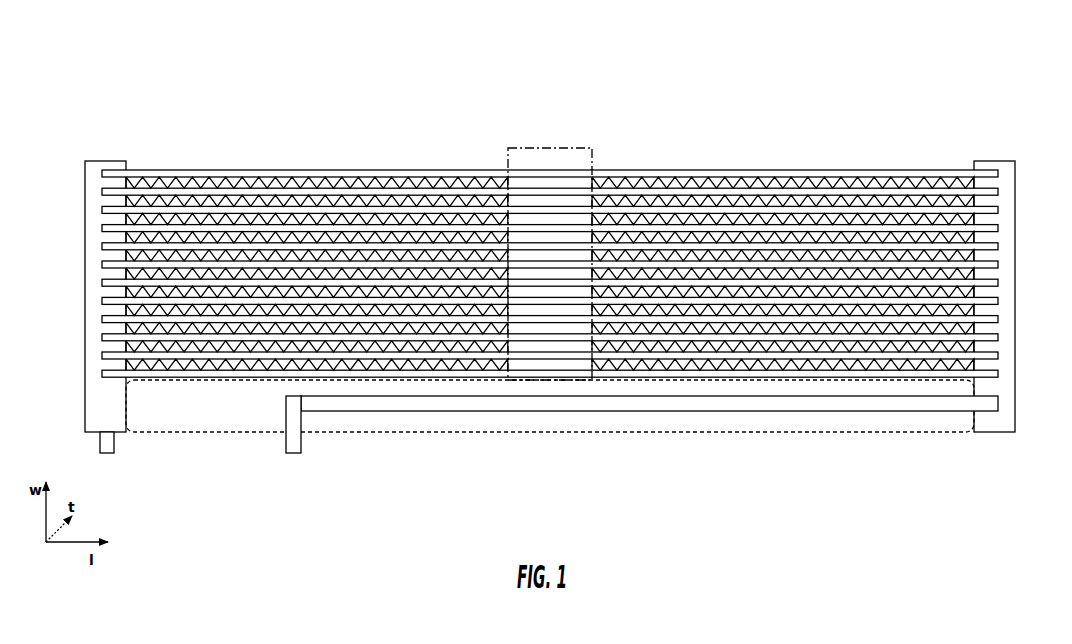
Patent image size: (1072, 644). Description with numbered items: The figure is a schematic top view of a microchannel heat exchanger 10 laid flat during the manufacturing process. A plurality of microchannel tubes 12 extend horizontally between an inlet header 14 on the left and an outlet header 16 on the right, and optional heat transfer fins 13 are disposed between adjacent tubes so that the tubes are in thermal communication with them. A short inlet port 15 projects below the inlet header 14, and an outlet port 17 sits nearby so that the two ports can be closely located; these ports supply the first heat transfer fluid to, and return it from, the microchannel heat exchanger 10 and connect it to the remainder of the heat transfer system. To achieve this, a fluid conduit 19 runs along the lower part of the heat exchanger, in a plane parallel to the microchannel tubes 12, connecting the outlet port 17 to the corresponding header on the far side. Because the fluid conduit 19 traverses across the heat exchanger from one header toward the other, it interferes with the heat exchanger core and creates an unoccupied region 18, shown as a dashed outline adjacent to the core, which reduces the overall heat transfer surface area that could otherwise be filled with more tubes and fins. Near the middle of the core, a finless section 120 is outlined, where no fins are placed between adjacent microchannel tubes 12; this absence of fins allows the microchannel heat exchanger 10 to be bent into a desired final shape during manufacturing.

The microchannel heat exchanger 10 is at (288, 64).
The microchannel tubes 12 is at (233, 170).
The heat transfer fins 13 is at (281, 175).
The inlet header 14 is at (85, 292).
The inlet port 15 is at (107, 453).
The outlet header 16 is at (1015, 298).
The outlet port 17 is at (294, 453).
The unoccupied region 18 is at (853, 432).
The fluid conduit 19 is at (596, 411).
The finless section 120 is at (575, 148).